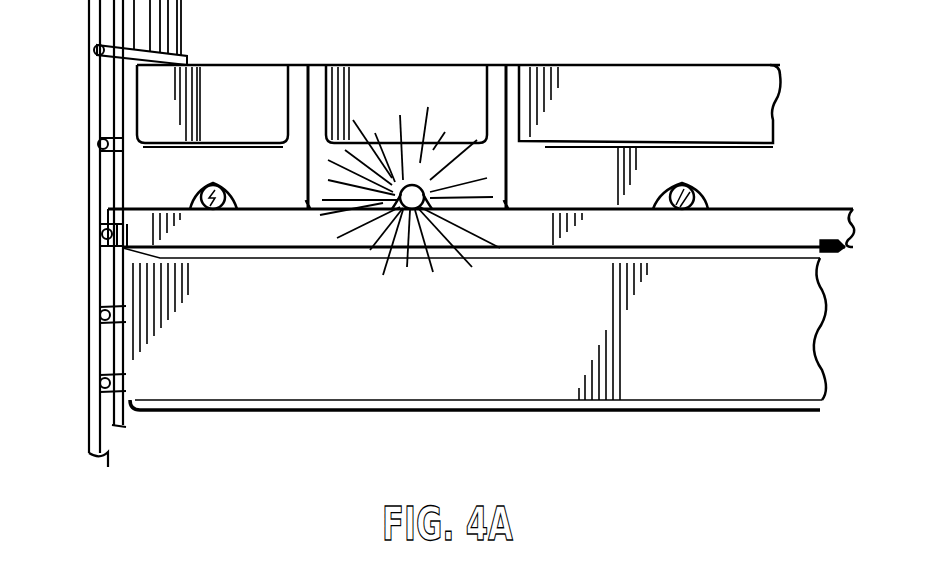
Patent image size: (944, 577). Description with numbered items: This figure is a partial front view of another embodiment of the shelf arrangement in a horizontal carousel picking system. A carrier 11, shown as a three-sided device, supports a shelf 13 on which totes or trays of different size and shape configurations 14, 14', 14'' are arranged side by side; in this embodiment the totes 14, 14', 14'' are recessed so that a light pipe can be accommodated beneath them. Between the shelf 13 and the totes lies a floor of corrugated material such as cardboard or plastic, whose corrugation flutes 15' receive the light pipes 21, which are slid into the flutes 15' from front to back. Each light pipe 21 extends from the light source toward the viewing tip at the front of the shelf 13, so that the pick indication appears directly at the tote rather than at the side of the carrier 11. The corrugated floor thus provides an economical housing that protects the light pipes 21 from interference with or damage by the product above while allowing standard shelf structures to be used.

The carrier 11 is at (90, 212).
The shelf 13 is at (845, 250).
The tote 14 is at (650, 107).
The tote 14' is at (406, 76).
The tote 14'' is at (249, 78).
The corrugation flute 15' is at (746, 178).
The light pipe 21 is at (687, 209).